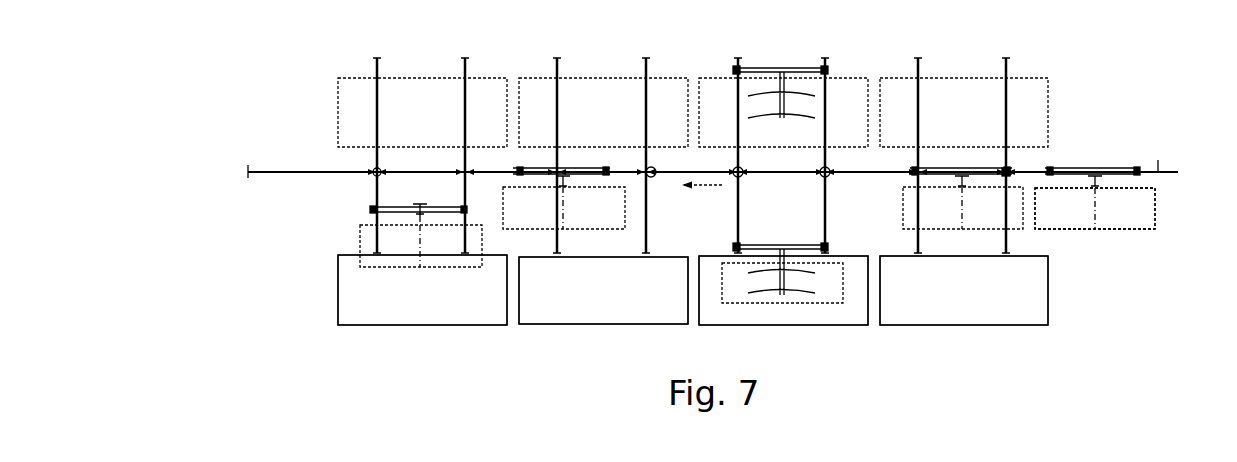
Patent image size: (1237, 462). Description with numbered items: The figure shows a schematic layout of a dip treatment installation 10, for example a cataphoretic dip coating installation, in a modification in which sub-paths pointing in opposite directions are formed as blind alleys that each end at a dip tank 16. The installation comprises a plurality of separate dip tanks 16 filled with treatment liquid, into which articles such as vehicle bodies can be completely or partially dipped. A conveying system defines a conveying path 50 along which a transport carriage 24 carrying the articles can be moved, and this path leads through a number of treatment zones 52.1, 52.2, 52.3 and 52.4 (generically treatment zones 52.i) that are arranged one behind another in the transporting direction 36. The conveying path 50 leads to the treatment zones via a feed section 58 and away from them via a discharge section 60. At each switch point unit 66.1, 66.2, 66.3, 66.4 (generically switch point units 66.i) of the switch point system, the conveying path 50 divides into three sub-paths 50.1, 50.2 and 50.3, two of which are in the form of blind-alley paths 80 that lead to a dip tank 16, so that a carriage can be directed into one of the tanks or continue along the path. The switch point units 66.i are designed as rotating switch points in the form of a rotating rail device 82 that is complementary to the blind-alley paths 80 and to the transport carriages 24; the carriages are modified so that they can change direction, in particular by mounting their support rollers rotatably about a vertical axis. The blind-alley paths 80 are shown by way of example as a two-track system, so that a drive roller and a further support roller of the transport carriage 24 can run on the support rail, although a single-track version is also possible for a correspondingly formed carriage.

The dip treatment installation 10 is at (1150, 70).
The dip tank 16 is at (338, 318).
The transport carriage 24 is at (1105, 182).
The transporting direction 36 is at (720, 186).
The conveying path 50 is at (1176, 168).
The first sub-path 50.1 is at (457, 243).
The second sub-path 50.2 is at (272, 173).
The third sub-path 50.3 is at (385, 76).
The treatment zone 52.1 is at (977, 330).
The treatment zone 52.2 is at (787, 330).
The treatment zone 52.3 is at (608, 328).
The treatment zone 52.4 is at (390, 328).
The treatment zone 52.i is at (1068, 350).
The feed section 58 is at (1158, 160).
The discharge section 60 is at (250, 171).
The switch point unit 66.1 is at (930, 160).
The switch point unit 66.2 is at (812, 181).
The switch point unit 66.3 is at (568, 162).
The switch point unit 66.4 is at (388, 160).
The switch point unit 66.i is at (1048, 160).
The blind-alley path 80 is at (550, 100).
The rotating rail device 82 is at (658, 165).